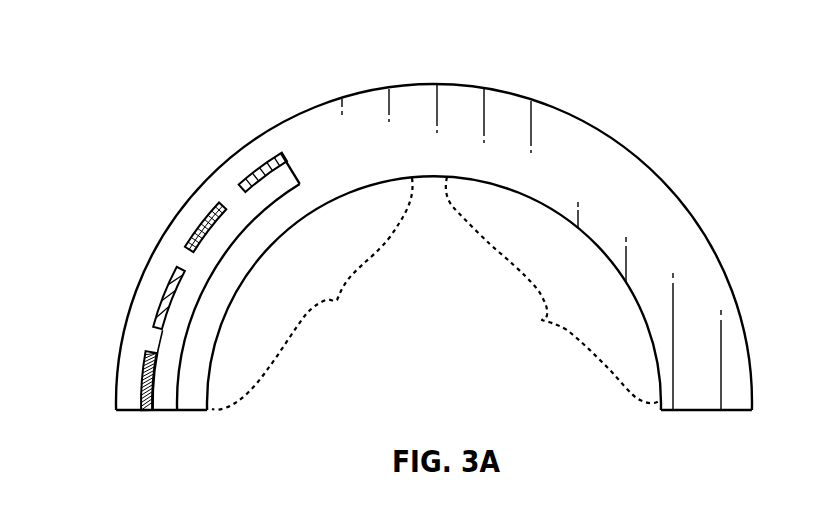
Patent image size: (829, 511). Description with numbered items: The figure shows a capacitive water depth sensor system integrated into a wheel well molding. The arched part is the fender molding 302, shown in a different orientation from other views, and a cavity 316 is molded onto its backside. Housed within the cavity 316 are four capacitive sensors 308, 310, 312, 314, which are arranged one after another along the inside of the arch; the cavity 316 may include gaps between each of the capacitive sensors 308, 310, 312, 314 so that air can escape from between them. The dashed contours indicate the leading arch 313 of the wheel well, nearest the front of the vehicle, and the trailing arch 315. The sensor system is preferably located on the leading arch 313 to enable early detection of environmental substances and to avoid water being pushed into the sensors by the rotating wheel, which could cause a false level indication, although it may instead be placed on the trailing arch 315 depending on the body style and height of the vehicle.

The fender molding 302 is at (312, 110).
The capacitive sensor 308 is at (243, 185).
The capacitive sensor 310 is at (191, 247).
The capacitive sensor 312 is at (160, 303).
The capacitive sensor 314 is at (141, 386).
The cavity 316 is at (189, 325).
The leading arch 313 is at (312, 294).
The trailing arch 315 is at (552, 290).